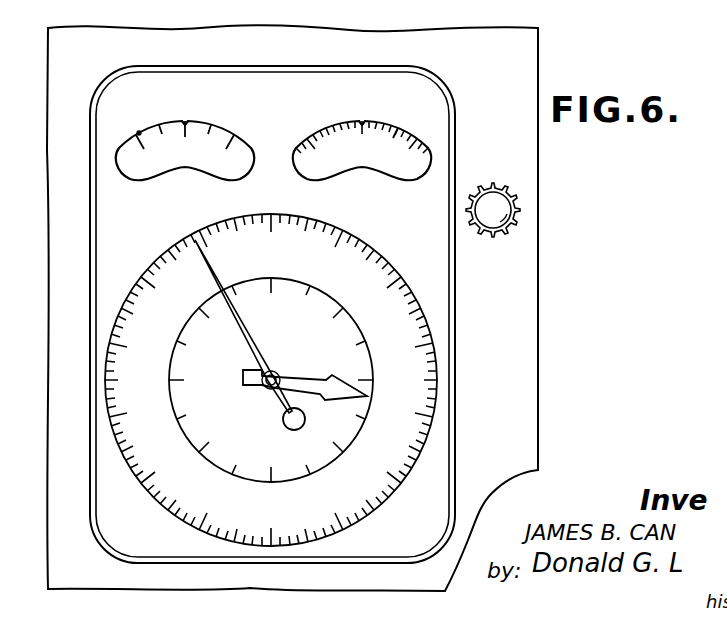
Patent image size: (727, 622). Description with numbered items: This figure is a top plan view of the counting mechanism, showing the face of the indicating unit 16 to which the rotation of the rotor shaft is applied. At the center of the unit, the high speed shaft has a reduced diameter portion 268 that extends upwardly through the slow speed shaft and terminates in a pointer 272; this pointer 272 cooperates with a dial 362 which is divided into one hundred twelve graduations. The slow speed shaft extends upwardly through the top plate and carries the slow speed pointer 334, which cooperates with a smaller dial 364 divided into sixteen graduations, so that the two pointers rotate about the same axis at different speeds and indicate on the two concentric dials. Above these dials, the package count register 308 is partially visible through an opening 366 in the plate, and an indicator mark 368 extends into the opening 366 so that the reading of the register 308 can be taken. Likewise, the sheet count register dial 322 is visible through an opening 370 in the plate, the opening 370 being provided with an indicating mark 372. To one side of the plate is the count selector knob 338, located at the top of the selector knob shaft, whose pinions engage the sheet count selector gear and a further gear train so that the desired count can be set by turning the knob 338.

The indicating unit 16 is at (528, 300).
The package count register 308 is at (173, 142).
The opening 366 is at (144, 130).
The indicator mark 368 is at (186, 124).
The sheet count register dial 322 is at (387, 146).
The indicating mark 372 is at (362, 123).
The opening 370 is at (395, 132).
The count selector knob 338 is at (505, 210).
The dial 362 is at (417, 288).
The dial 364 is at (363, 368).
The pointer 272 is at (204, 275).
The slow speed pointer 334 is at (313, 350).
The reduced diameter portion 268 is at (265, 386).